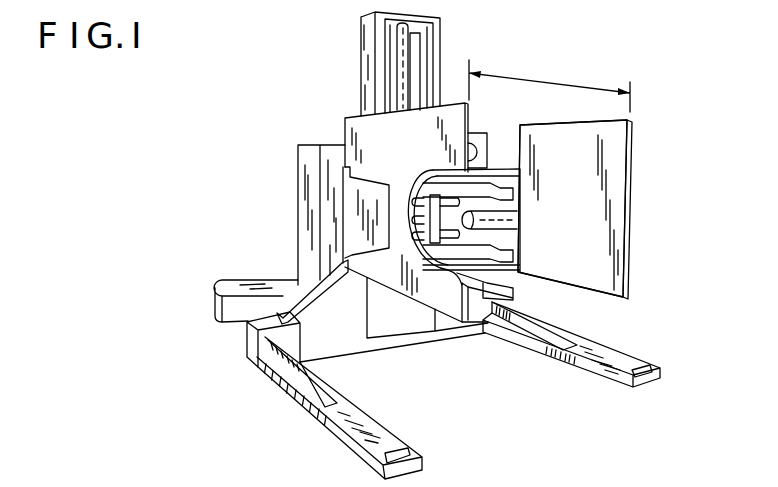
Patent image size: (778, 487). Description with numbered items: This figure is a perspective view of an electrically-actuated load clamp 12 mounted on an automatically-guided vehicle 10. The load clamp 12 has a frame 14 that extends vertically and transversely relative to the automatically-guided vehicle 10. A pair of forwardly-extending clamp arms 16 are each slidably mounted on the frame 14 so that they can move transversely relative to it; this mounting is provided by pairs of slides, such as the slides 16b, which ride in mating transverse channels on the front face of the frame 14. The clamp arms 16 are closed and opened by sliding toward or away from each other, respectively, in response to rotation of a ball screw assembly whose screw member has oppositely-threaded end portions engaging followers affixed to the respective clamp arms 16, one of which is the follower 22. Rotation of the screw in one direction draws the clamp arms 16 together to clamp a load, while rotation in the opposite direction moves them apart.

The automatically-guided vehicle 10 is at (280, 205).
The load clamp 12 is at (643, 172).
The frame 14 is at (493, 273).
The clamp arms 16 is at (414, 150).
The slides 16b is at (510, 193).
The follower 22 is at (493, 223).